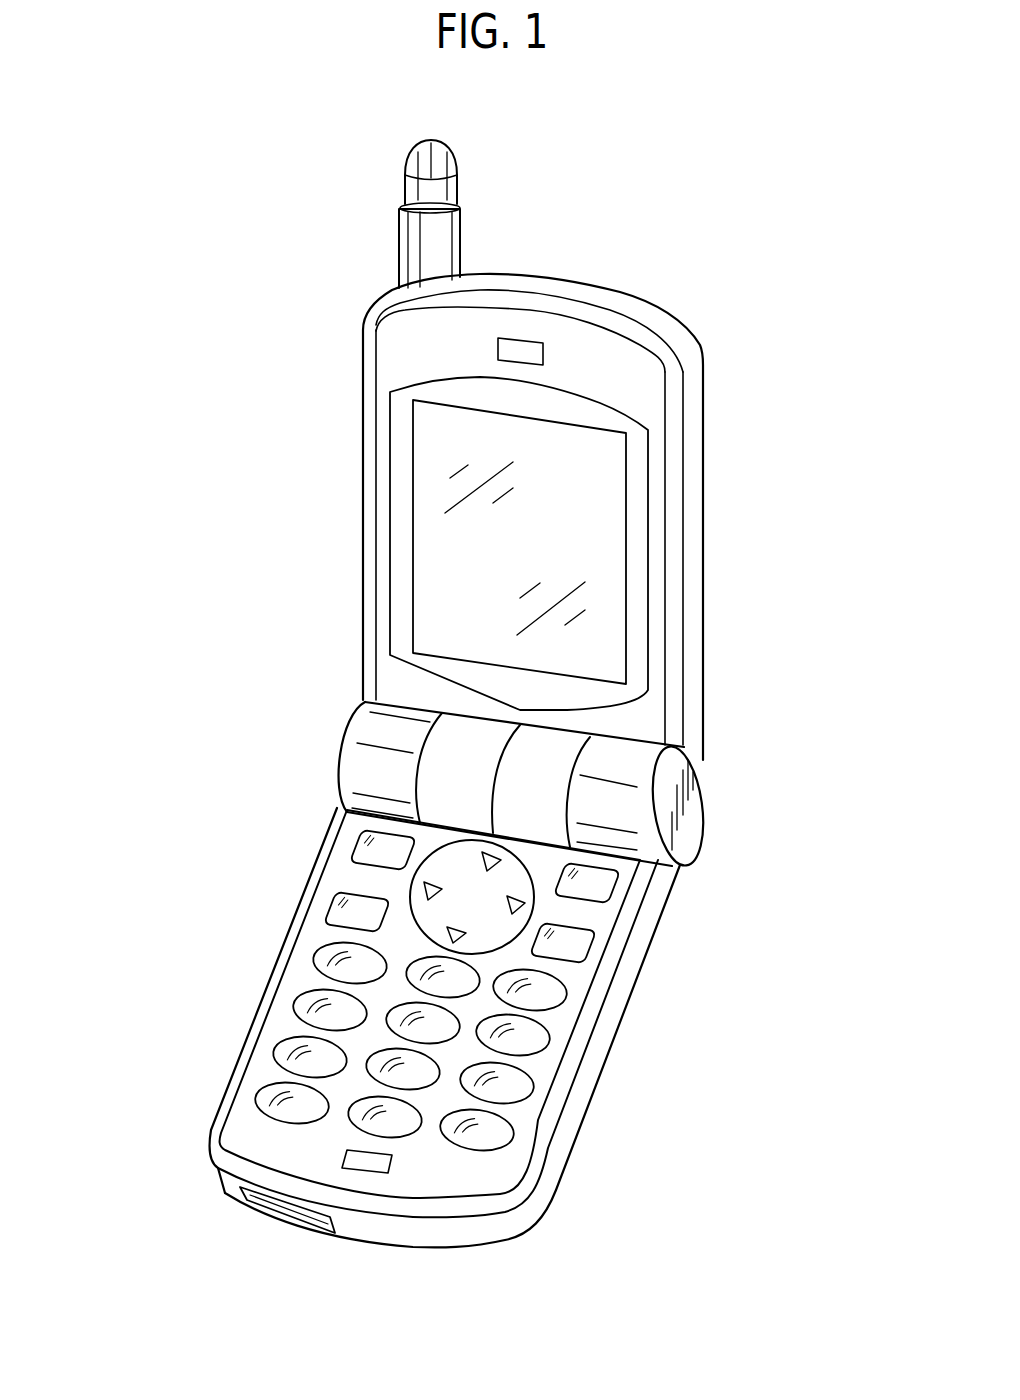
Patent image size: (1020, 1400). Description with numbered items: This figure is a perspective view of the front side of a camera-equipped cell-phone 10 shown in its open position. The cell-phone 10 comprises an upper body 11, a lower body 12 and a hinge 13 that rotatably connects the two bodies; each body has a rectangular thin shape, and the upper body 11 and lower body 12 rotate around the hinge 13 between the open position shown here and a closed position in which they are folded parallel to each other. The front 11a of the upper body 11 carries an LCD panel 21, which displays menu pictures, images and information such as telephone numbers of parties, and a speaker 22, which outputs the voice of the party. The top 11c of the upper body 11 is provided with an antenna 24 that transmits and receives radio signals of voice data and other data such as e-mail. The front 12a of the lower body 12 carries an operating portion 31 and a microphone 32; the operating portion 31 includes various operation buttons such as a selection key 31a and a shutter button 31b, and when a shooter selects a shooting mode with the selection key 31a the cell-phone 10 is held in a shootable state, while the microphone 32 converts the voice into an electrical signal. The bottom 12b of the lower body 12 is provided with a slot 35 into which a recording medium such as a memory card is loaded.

The camera-equipped cell-phone 10 is at (636, 146).
The upper body 11 is at (352, 470).
The front of the upper body 11a is at (603, 363).
The top of the upper body 11c is at (508, 278).
The lower body 12 is at (632, 1027).
The front of the lower body 12a is at (240, 1120).
The bottom of the lower body 12b is at (468, 1230).
The hinge 13 is at (327, 733).
The LCD panel 21 is at (457, 598).
The speaker 22 is at (498, 348).
The antenna 24 is at (413, 185).
The operating portion 31 is at (282, 1000).
The selection key 31a is at (505, 873).
The shutter button 31b is at (397, 850).
The microphone 32 is at (392, 1162).
The slot 35 is at (287, 1207).